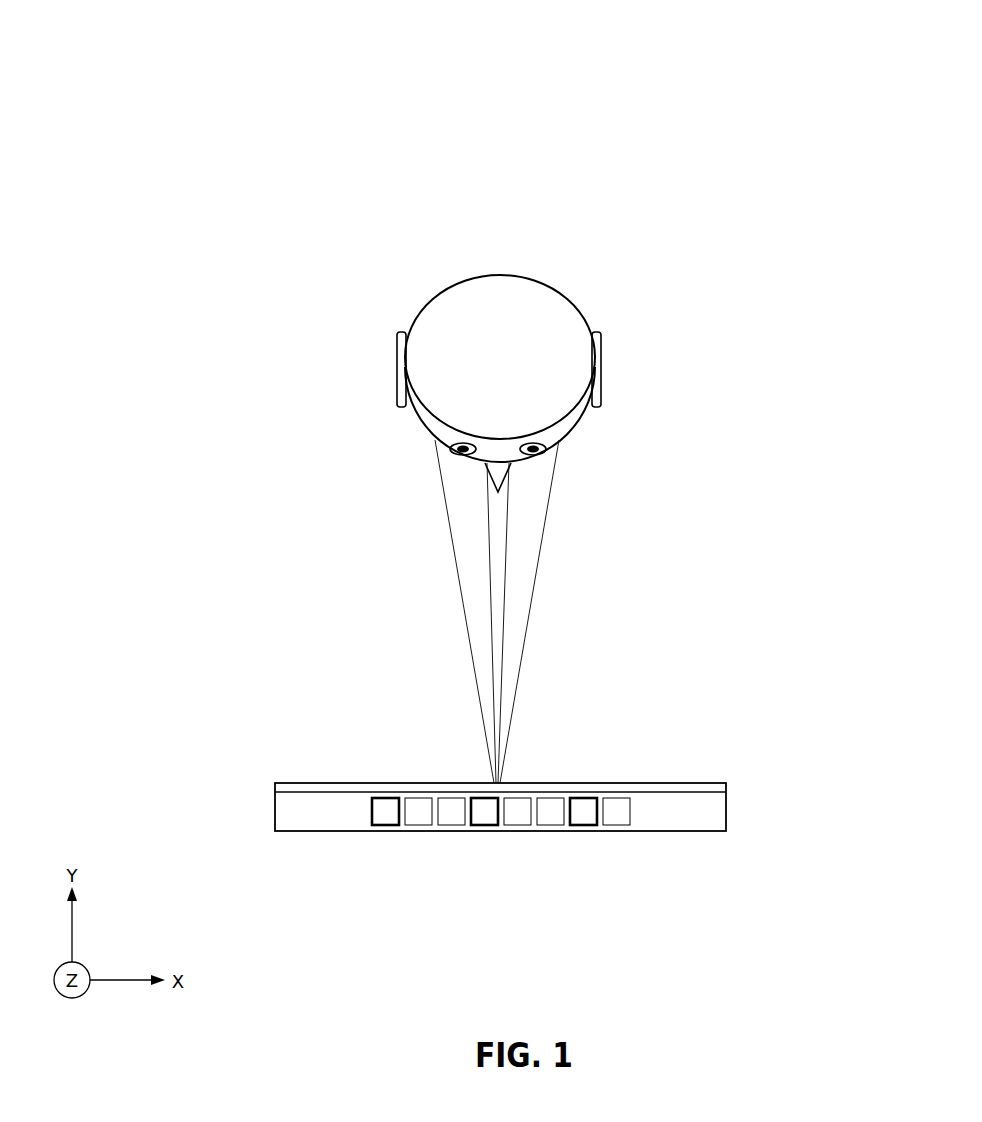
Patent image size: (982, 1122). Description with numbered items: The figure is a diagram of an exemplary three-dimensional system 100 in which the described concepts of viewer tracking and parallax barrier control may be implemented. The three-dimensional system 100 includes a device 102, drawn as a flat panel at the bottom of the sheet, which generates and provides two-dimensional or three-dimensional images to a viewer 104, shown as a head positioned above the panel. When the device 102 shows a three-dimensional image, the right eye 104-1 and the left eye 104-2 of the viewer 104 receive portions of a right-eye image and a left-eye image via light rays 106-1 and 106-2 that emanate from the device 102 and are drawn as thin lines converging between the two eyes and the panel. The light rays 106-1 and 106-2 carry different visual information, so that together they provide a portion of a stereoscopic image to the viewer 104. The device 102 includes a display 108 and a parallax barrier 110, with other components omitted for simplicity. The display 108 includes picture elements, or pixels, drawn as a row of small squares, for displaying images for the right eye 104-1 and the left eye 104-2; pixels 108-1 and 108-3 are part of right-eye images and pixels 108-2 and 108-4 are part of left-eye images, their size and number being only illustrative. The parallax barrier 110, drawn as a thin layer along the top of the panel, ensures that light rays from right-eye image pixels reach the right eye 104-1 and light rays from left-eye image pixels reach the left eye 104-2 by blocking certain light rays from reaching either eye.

The 3D system 100 is at (522, 80).
The device 102 is at (270, 783).
The viewer 104 is at (562, 293).
The right eye 104-1 is at (463, 454).
The left eye 104-2 is at (533, 454).
The light rays 106-1 is at (475, 587).
The light rays 106-2 is at (522, 602).
The display 108 is at (483, 826).
The pixel 108-1 is at (550, 825).
The pixel 108-2 is at (583, 825).
The pixel 108-3 is at (484, 825).
The pixel 108-4 is at (517, 825).
The parallax barrier 110 is at (300, 784).